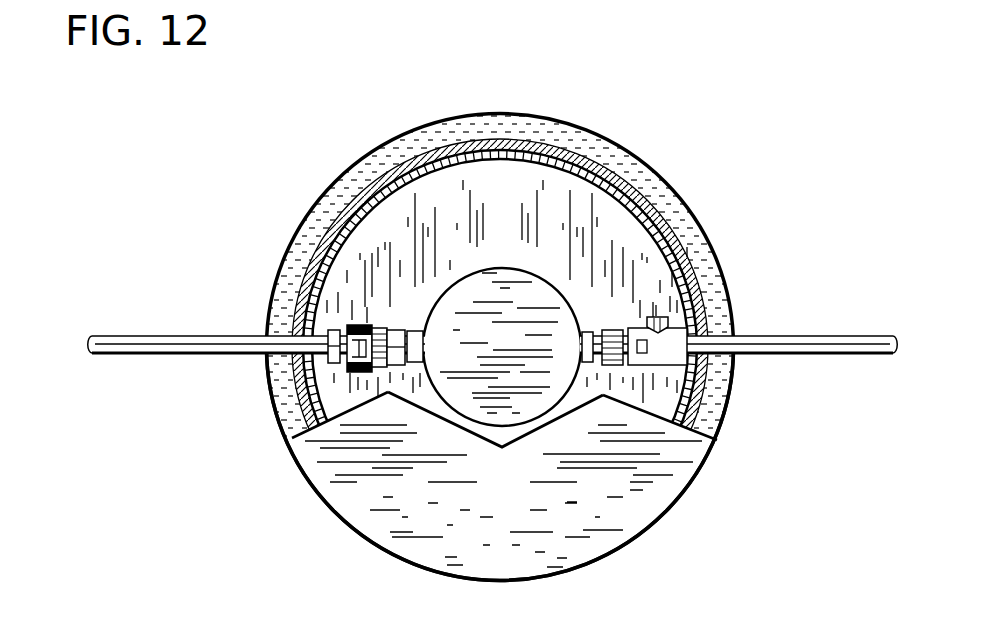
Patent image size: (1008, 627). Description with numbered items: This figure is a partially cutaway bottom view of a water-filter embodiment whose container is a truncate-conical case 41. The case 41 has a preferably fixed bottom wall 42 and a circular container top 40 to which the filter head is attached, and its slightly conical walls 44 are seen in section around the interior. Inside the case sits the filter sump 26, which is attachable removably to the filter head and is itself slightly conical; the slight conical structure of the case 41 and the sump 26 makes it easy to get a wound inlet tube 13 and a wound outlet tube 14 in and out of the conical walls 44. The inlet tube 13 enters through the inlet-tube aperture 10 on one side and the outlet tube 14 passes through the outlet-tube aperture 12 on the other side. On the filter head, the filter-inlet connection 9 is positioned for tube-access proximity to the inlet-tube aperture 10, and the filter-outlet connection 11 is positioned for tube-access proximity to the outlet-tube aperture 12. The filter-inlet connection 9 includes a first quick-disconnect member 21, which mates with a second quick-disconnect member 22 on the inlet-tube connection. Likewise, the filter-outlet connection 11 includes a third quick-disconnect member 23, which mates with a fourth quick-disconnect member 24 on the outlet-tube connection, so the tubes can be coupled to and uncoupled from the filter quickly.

The truncate-conical case 41 is at (262, 140).
The circular container top 40 is at (448, 203).
The conical walls 44 is at (603, 172).
The filter-outlet connection 11 is at (403, 327).
The third quick-disconnect member 23 is at (357, 323).
The fourth quick-disconnect member 24 is at (327, 333).
The outlet tube 14 is at (225, 337).
The outlet-tube aperture 12 is at (293, 355).
The bottom wall 42 is at (372, 488).
The filter-inlet connection 9 is at (597, 332).
The first quick-disconnect member 21 is at (664, 316).
The second quick-disconnect member 22 is at (686, 320).
The inlet tube 13 is at (763, 337).
The inlet-tube aperture 10 is at (722, 355).
The filter sump 26 is at (503, 347).